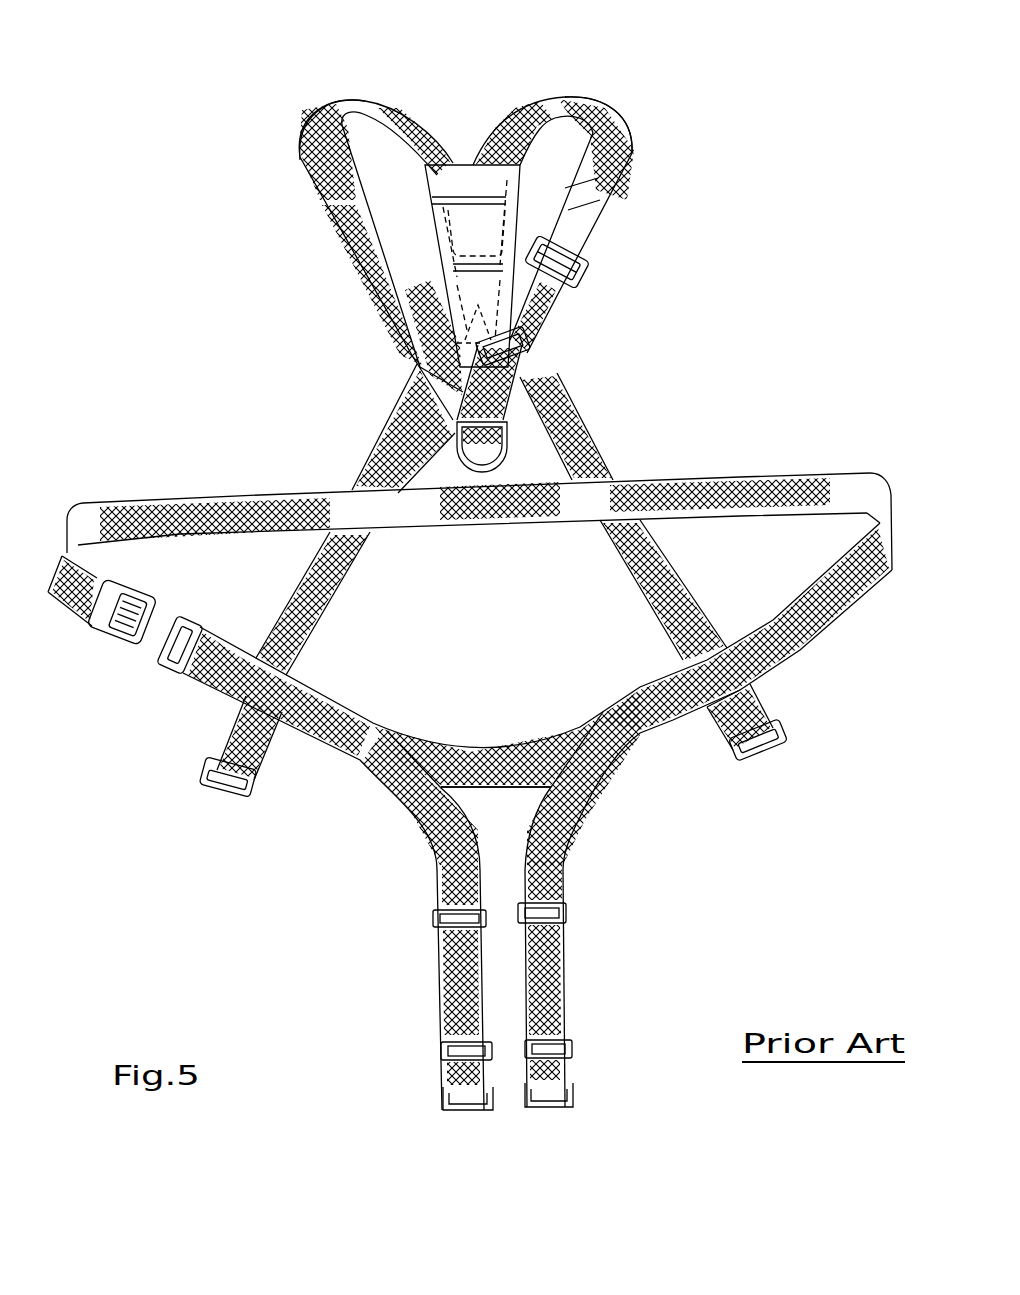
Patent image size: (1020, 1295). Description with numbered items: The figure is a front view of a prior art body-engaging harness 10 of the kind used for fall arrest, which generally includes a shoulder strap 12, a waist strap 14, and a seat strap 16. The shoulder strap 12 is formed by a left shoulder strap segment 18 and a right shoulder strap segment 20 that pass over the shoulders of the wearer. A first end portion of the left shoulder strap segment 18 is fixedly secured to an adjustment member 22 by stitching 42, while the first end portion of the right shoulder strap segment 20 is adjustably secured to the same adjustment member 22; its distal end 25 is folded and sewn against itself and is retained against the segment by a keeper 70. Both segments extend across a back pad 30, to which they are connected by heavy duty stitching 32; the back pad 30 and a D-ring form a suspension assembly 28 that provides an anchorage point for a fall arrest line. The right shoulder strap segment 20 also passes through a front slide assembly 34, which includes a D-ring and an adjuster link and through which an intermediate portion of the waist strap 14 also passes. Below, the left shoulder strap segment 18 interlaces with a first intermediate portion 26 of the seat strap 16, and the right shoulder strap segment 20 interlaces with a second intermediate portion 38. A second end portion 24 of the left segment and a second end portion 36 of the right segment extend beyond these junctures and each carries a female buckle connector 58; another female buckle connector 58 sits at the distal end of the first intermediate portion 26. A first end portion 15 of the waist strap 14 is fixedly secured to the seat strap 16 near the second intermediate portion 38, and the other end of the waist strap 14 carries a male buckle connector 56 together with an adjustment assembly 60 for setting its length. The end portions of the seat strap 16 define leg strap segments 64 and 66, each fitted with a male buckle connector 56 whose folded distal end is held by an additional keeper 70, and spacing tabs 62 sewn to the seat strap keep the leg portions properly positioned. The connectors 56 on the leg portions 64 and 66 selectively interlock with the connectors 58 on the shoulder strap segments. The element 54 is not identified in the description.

The harness 10 is at (628, 98).
The shoulder strap 12 is at (355, 95).
The waist strap 14 is at (762, 465).
The first end portion of the waist strap 15 is at (791, 657).
The seat strap 16 is at (468, 740).
The left shoulder strap segment 18 is at (507, 108).
The right shoulder strap segment 20 is at (353, 262).
The adjustment member 22 is at (585, 282).
The second end portion of the left shoulder strap segment 24 is at (283, 752).
The distal end of the right shoulder strap segment 25 is at (525, 376).
The first intermediate portion of the seat strap 26 is at (262, 650).
The suspension assembly 28 is at (471, 143).
The back pad 30 is at (421, 177).
The stitching 32 is at (508, 182).
The front slide assembly 34 is at (457, 450).
The second end portion of the right shoulder strap segment 36 is at (699, 718).
The second intermediate portion of the seat strap 38 is at (700, 622).
The stitching 42 is at (597, 222).
The connecting strap 54 is at (142, 656).
The male buckle connector 56 is at (443, 1095).
The female buckle connector 58 is at (188, 624).
The adjustment assembly 60 is at (117, 582).
The spacing tabs 62 is at (551, 787).
The leg strap segment 64 is at (440, 970).
The leg strap segment 66 is at (562, 967).
The keeper 70 is at (525, 345).